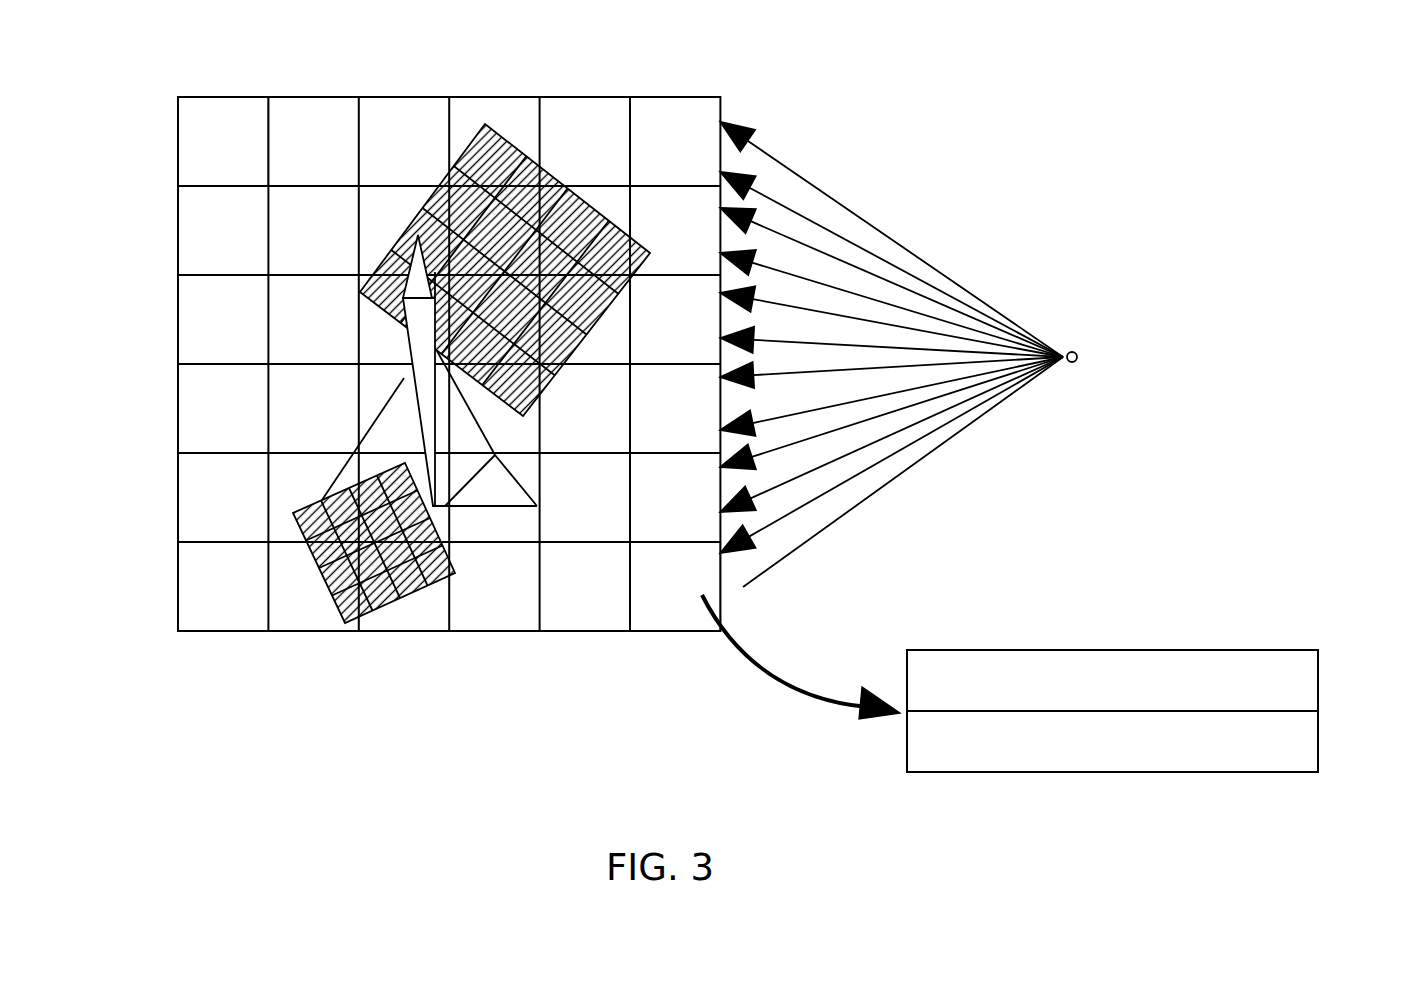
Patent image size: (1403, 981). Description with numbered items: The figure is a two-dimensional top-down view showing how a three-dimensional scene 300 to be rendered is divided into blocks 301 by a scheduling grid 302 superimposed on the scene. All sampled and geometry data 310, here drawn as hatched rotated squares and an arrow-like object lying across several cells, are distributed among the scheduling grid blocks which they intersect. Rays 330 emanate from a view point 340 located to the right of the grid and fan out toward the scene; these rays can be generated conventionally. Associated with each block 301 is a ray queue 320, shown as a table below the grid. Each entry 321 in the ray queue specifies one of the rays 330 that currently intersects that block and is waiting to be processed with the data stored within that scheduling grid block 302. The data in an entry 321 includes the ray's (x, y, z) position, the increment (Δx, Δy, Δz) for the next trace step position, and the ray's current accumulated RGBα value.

The 3D scene 300 is at (404, 367).
The block 301 is at (213, 125).
The scheduling grid 302 is at (178, 146).
The sampled and geometry data 310 is at (487, 495).
The ray queue 320 is at (1155, 675).
The entry 321 is at (1318, 678).
The rays 330 is at (930, 262).
The view point 340 is at (1078, 357).